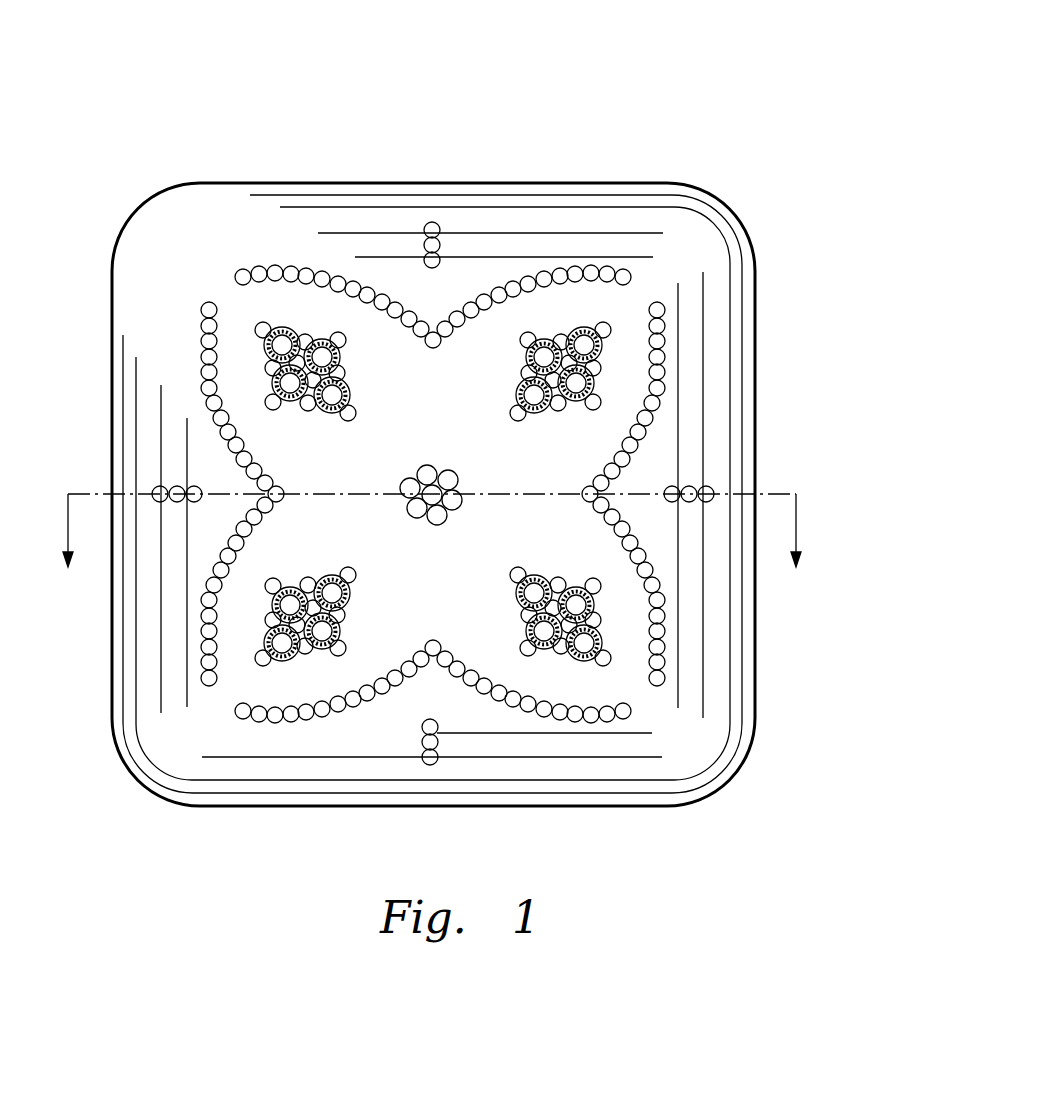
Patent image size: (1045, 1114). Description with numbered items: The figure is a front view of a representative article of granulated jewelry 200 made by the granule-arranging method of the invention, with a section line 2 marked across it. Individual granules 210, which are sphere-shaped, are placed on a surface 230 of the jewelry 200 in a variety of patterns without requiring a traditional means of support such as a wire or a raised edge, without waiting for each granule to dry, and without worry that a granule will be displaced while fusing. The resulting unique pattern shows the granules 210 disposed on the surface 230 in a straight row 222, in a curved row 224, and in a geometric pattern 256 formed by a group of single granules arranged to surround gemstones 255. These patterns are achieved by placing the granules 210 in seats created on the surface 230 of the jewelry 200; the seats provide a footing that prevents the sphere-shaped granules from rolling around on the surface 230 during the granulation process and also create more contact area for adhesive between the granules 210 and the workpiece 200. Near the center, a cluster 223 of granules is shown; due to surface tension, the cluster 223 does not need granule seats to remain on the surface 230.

The granulated jewelry 200 is at (465, 441).
The surface 230 is at (253, 170).
The granules 210 is at (427, 258).
The straight row 222 is at (722, 475).
The cluster 223 is at (458, 534).
The curved row 224 is at (186, 397).
The gemstones 255 is at (350, 593).
The geometric pattern 256 is at (346, 588).
The section line 2- 2 is at (431, 559).